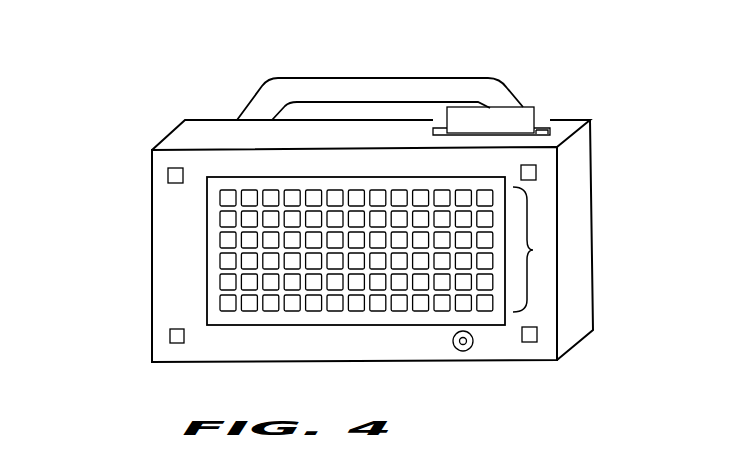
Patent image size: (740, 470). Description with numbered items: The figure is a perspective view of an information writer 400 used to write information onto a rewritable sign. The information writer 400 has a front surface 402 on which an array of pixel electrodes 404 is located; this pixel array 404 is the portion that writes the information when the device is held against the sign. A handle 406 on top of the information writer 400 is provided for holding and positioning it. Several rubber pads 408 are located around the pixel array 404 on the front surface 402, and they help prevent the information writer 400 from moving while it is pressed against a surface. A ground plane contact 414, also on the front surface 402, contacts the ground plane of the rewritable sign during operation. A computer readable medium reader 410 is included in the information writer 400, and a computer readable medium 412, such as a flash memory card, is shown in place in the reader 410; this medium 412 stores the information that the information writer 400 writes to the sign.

The information writer 400 is at (353, 221).
The front surface 402 is at (180, 263).
The array of pixel electrodes 404 is at (533, 250).
The handle 406 is at (340, 83).
The rubber pads 408 is at (168, 175).
The computer readable medium reader 410 is at (543, 130).
The computer readable medium 412 is at (525, 105).
The ground plane contact 414 is at (465, 351).